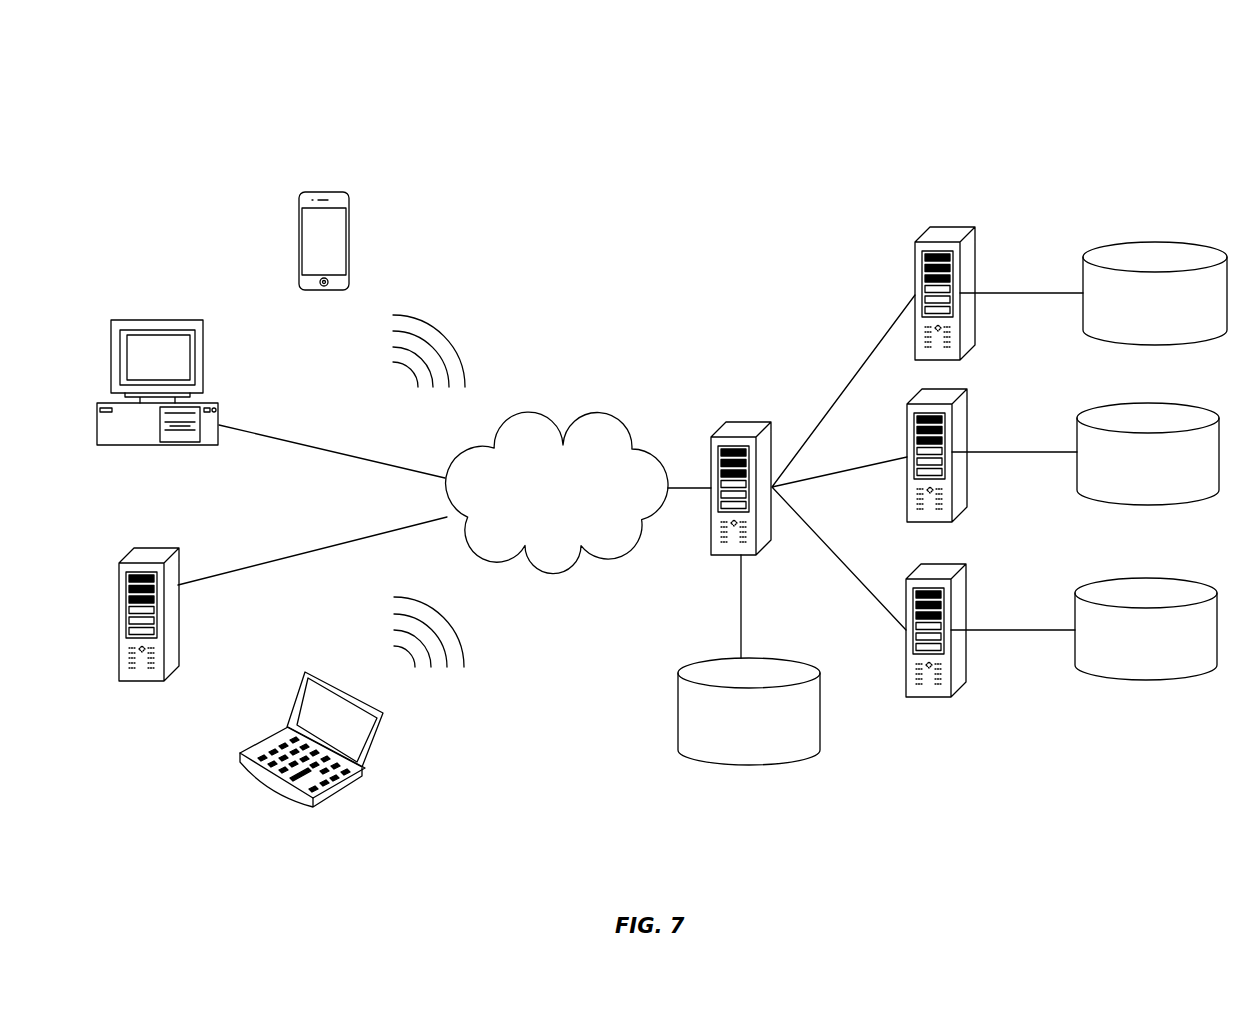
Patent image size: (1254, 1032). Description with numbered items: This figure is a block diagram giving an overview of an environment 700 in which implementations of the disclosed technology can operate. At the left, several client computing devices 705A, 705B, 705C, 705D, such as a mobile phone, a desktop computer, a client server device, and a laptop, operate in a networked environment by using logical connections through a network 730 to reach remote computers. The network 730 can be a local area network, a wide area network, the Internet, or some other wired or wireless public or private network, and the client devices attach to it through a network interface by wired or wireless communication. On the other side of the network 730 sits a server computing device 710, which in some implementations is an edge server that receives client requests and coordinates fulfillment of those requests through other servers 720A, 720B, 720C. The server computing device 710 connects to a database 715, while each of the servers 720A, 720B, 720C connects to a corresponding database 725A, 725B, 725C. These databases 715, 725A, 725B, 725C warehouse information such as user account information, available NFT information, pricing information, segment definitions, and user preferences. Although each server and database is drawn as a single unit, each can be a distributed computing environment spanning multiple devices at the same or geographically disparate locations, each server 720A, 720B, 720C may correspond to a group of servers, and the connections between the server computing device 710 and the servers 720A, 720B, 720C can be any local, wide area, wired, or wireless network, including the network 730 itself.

The environment 700 is at (1030, 108).
The client computing device 705A is at (345, 194).
The client computing device 705B is at (197, 322).
The client computing device 705C is at (170, 548).
The client computing device 705D is at (378, 741).
The server computing device 710 is at (752, 422).
The database 715 is at (810, 671).
The server 720A is at (960, 232).
The server 720B is at (965, 392).
The server 720C is at (965, 567).
The database 725A is at (1152, 234).
The database 725B is at (1146, 396).
The database 725C is at (1146, 573).
The network 730 is at (610, 409).